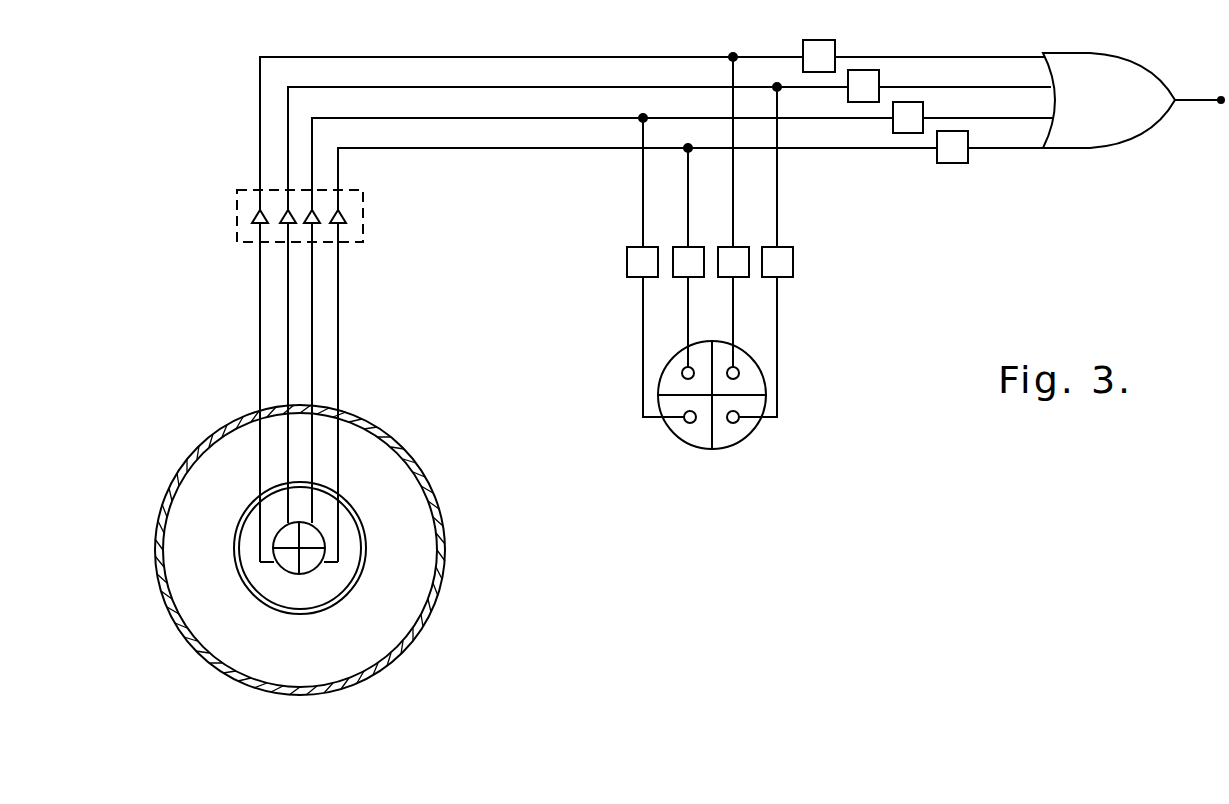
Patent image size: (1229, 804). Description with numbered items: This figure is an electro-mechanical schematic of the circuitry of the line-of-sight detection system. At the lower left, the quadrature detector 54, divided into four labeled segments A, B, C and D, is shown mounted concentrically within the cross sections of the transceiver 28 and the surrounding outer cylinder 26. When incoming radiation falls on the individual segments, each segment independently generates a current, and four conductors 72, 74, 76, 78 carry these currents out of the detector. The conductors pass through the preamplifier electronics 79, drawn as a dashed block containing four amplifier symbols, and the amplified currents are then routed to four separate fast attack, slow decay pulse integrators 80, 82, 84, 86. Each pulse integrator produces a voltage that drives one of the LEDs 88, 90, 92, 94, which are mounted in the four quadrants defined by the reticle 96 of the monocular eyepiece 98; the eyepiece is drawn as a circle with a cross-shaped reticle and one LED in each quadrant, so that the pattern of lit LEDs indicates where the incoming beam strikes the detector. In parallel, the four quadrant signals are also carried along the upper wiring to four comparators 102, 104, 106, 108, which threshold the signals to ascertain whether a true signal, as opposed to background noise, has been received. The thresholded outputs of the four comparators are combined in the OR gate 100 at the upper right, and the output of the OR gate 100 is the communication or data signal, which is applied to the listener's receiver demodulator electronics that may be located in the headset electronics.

The outer cylinder 26 is at (428, 481).
The transceiver 28 is at (360, 536).
The quadrature detector 54 is at (320, 572).
The conductor 72 is at (313, 333).
The conductor 74 is at (338, 383).
The conductor 76 is at (258, 278).
The conductor 78 is at (285, 316).
The preamplifier electronics 79 is at (363, 190).
The fast attack, slow decay pulse integrator 80 is at (627, 247).
The fast attack, slow decay pulse integrator 82 is at (675, 247).
The fast attack, slow decay pulse integrator 84 is at (720, 247).
The fast attack, slow decay pulse integrator 86 is at (793, 247).
The LED 88 is at (685, 367).
The LED 90 is at (737, 366).
The LED 92 is at (742, 420).
The LED 94 is at (684, 421).
The reticle 96 is at (758, 392).
The monocular eyepiece 98 is at (726, 448).
The OR gate 100 is at (1140, 66).
The comparator 102 is at (893, 131).
The comparator 104 is at (878, 73).
The comparator 106 is at (968, 160).
The comparator 108 is at (835, 42).